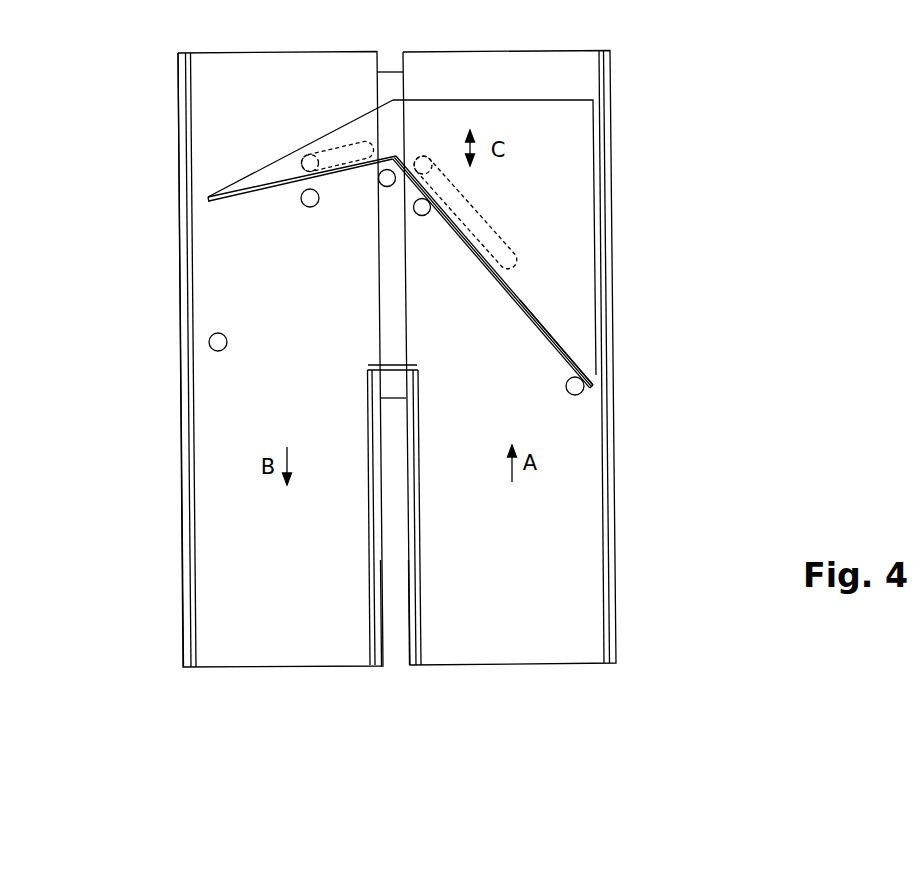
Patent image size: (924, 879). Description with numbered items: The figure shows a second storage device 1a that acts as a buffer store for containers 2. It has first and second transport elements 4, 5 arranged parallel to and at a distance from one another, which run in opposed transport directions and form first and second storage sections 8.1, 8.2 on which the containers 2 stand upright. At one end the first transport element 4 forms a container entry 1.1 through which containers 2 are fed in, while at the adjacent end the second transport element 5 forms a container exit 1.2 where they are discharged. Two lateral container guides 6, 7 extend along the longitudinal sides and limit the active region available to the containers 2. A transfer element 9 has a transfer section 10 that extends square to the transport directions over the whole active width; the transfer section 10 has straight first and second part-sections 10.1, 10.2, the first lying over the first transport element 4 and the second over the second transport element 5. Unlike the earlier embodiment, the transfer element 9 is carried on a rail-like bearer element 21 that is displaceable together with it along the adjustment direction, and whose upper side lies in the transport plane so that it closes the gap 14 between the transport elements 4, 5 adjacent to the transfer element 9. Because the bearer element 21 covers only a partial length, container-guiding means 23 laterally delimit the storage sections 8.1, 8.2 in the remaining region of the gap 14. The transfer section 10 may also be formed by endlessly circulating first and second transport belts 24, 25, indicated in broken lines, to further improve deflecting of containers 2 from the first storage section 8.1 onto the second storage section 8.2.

The second storage device 1a is at (705, 110).
The container entry 1.1 is at (558, 369).
The container exit 1.2 is at (223, 375).
The containers 2 is at (313, 207).
The first transport element 4 is at (627, 460).
The second transport element 5 is at (170, 515).
The lateral container guide 6 is at (605, 538).
The lateral container guide 7 is at (190, 400).
The first storage section 8.1 is at (509, 358).
The second storage section 8.2 is at (280, 360).
The transfer element 9 is at (606, 226).
The transfer section 10 is at (551, 303).
The first part-section 10.1 is at (558, 337).
The second part-section 10.2 is at (233, 186).
The gap 14 is at (400, 541).
The bearer element 21 is at (485, 330).
The container-guiding means 23 is at (372, 600).
The first transport belt 24 is at (480, 213).
The second transport belt 25 is at (317, 148).